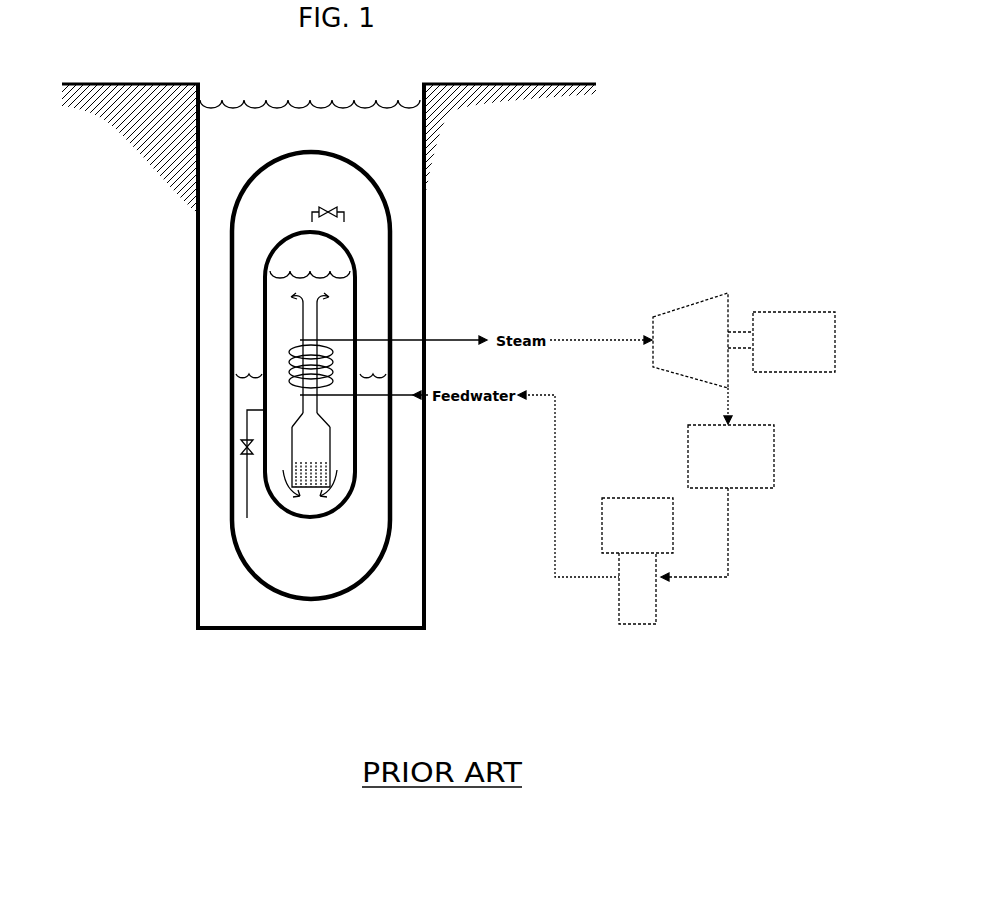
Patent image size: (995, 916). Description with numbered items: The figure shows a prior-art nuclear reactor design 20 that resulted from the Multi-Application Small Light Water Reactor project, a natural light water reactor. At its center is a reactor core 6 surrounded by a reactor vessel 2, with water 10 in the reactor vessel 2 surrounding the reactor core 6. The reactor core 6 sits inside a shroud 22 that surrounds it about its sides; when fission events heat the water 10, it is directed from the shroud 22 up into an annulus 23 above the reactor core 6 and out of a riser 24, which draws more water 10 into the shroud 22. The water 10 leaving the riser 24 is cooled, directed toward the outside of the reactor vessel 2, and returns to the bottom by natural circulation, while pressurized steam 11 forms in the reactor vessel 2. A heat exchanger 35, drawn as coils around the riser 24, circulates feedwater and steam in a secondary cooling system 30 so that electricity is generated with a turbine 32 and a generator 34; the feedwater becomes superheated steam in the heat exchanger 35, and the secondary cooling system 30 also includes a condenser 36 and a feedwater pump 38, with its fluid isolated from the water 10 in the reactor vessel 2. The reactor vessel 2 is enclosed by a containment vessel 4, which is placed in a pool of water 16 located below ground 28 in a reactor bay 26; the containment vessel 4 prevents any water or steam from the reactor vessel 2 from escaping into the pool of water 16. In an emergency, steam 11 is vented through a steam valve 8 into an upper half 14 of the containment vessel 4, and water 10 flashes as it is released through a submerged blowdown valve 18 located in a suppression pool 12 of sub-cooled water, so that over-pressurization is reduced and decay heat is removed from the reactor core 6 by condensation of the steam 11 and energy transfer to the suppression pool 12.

The reactor vessel 2 is at (363, 288).
The containment vessel 4 is at (397, 240).
The reactor core 6 is at (337, 463).
The steam valve 8 is at (333, 212).
The water 10 is at (268, 281).
The pressurized steam 11 is at (300, 253).
The suppression pool 12 is at (328, 559).
The upper half of the containment vessel 14 is at (296, 207).
The pool of water 16 is at (243, 153).
The blowdown valve 18 is at (237, 453).
The nuclear reactor design 20 is at (216, 239).
The shroud 22 is at (333, 445).
The annulus 23 is at (325, 405).
The riser 24 is at (328, 326).
The reactor bay 26 is at (190, 543).
The ground 28 is at (595, 90).
The secondary cooling system 30 is at (718, 426).
The turbine 32 is at (701, 348).
The generator 34 is at (808, 351).
The heat exchanger 35 is at (283, 360).
The condenser 36 is at (738, 471).
The feedwater pump 38 is at (648, 533).